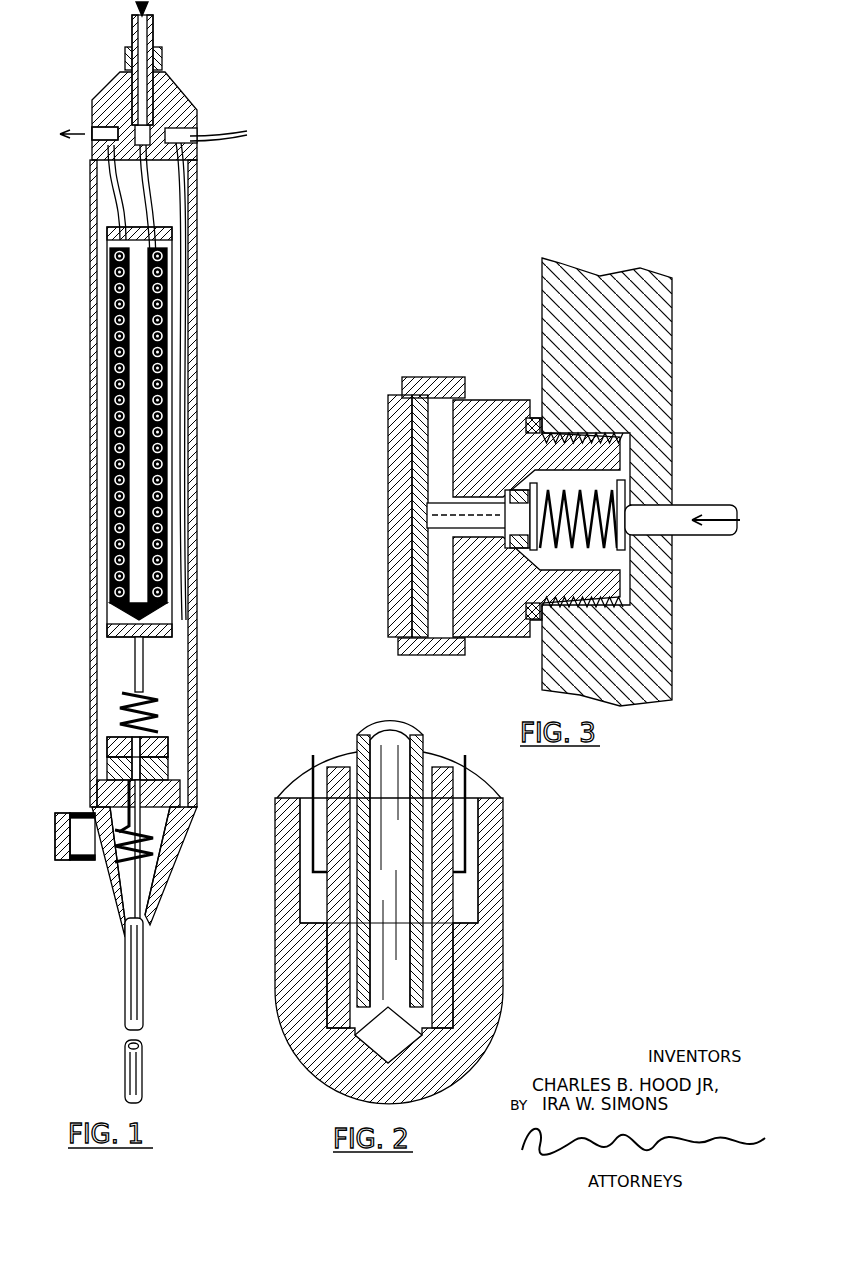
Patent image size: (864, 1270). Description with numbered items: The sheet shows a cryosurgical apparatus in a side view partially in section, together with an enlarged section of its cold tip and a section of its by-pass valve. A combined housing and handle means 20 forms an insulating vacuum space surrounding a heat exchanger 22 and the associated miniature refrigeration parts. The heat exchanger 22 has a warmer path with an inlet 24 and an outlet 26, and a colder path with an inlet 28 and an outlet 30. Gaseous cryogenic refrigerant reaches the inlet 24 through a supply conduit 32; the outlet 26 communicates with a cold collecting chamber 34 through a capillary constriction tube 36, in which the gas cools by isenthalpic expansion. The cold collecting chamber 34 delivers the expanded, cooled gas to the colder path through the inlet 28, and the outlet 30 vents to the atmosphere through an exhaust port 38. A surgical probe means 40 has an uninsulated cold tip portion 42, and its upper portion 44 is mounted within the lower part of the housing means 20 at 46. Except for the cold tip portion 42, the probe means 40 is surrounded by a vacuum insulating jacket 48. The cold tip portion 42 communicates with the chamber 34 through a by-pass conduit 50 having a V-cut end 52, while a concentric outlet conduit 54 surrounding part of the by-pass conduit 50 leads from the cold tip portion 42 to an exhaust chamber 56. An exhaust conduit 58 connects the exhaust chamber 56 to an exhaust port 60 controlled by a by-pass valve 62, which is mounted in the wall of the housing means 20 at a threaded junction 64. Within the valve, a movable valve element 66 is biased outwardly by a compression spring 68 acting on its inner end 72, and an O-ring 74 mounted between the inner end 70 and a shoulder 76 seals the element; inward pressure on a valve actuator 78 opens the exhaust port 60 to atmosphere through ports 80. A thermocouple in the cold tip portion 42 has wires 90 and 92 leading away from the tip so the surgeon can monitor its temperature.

In FIG. 1, the combined housing and handle means 20 is at (86, 458).
In FIG. 3, the combined housing and handle means 20 is at (538, 320).
In FIG. 1, the heat exchanger 22 is at (145, 306).
In FIG. 1, the inlet 24 is at (172, 163).
In FIG. 1, the outlet 26 is at (135, 656).
In FIG. 1, the inlet 28 is at (140, 748).
In FIG. 1, the outlet 30 is at (106, 160).
In FIG. 1, the supply conduit 32 is at (158, 56).
In FIG. 1, the cold collecting chamber 34 is at (132, 748).
In FIG. 1, the capillary constriction tube 36 is at (130, 695).
In FIG. 1, the exhaust port 38 is at (92, 128).
In FIG. 1, the surgical probe means 40 is at (152, 1012).
In FIG. 1, the cold tip portion 42 is at (142, 1098).
In FIG. 2, the cold tip portion 42 is at (490, 1037).
In FIG. 1, the upper portion 44 is at (147, 928).
In FIG. 1, the mounting location 46 is at (125, 938).
In FIG. 2, the vacuum insulating jacket 48 is at (470, 838).
In FIG. 1, the by-pass conduit 50 is at (140, 757).
In FIG. 2, the by-pass conduit 50 is at (420, 745).
In FIG. 2, the V-cut end 52 is at (345, 1030).
In FIG. 1, the concentric outlet conduit 54 is at (150, 830).
In FIG. 2, the concentric outlet conduit 54 is at (338, 770).
In FIG. 1, the exhaust chamber 56 is at (160, 770).
In FIG. 1, the exhaust conduit 58 is at (125, 807).
In FIG. 1, the exhaust port 60 is at (82, 850).
In FIG. 3, the exhaust port 60 is at (610, 483).
In FIG. 1, the by-pass valve 62 is at (56, 867).
In FIG. 3, the by-pass valve 62 is at (468, 661).
In FIG. 3, the threaded junction 64 is at (620, 438).
In FIG. 3, the movable valve element 66 is at (445, 530).
In FIG. 3, the compression spring 68 is at (605, 524).
In FIG. 3, the inner end 70 is at (627, 548).
In FIG. 3, the inner end 72 is at (540, 487).
In FIG. 3, the O-ring 74 is at (537, 548).
In FIG. 3, the shoulder 76 is at (500, 503).
In FIG. 3, the valve actuator 78 is at (388, 445).
In FIG. 3, the ports 80 is at (492, 493).
In FIG. 2, the wire 90 is at (313, 765).
In FIG. 2, the wire 92 is at (465, 762).